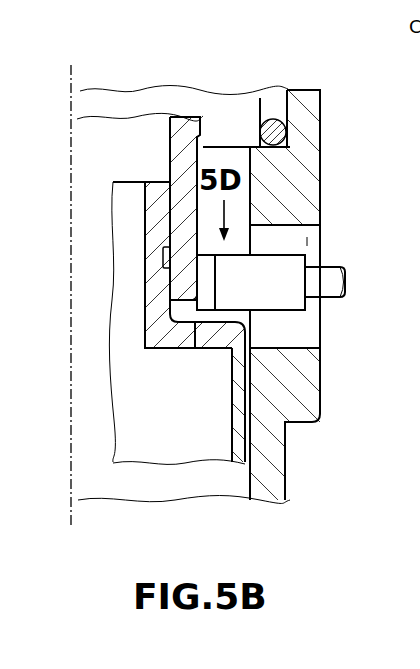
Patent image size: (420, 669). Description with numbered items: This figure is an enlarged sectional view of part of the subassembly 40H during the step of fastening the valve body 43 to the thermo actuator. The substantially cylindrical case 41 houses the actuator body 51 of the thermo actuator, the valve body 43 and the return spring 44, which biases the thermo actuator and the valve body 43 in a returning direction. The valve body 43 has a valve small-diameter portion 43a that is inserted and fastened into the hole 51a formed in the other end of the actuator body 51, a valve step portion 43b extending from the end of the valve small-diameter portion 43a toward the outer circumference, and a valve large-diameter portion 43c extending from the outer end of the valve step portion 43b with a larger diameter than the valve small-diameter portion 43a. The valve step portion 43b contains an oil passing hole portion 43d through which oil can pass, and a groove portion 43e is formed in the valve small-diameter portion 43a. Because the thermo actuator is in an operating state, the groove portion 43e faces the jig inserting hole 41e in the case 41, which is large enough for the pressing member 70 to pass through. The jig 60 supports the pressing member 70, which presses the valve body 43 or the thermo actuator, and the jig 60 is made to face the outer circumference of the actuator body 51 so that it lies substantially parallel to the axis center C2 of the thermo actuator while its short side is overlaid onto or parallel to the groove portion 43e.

The axis center C2 is at (70, 77).
The subassembly 40H is at (307, 89).
The case 41 is at (322, 120).
The jig inserting hole 41e is at (308, 242).
The return spring 44 is at (260, 98).
The actuator body 51 is at (217, 122).
The hole 51a is at (148, 128).
The valve body 43 is at (280, 437).
The valve small-diameter portion 43a is at (142, 195).
The valve step portion 43b is at (166, 350).
The valve large-diameter portion 43c is at (236, 436).
The oil passing hole portion 43d is at (208, 340).
The groove portion 43e is at (168, 258).
The pressing member 70 is at (301, 301).
The jig 60 is at (286, 298).